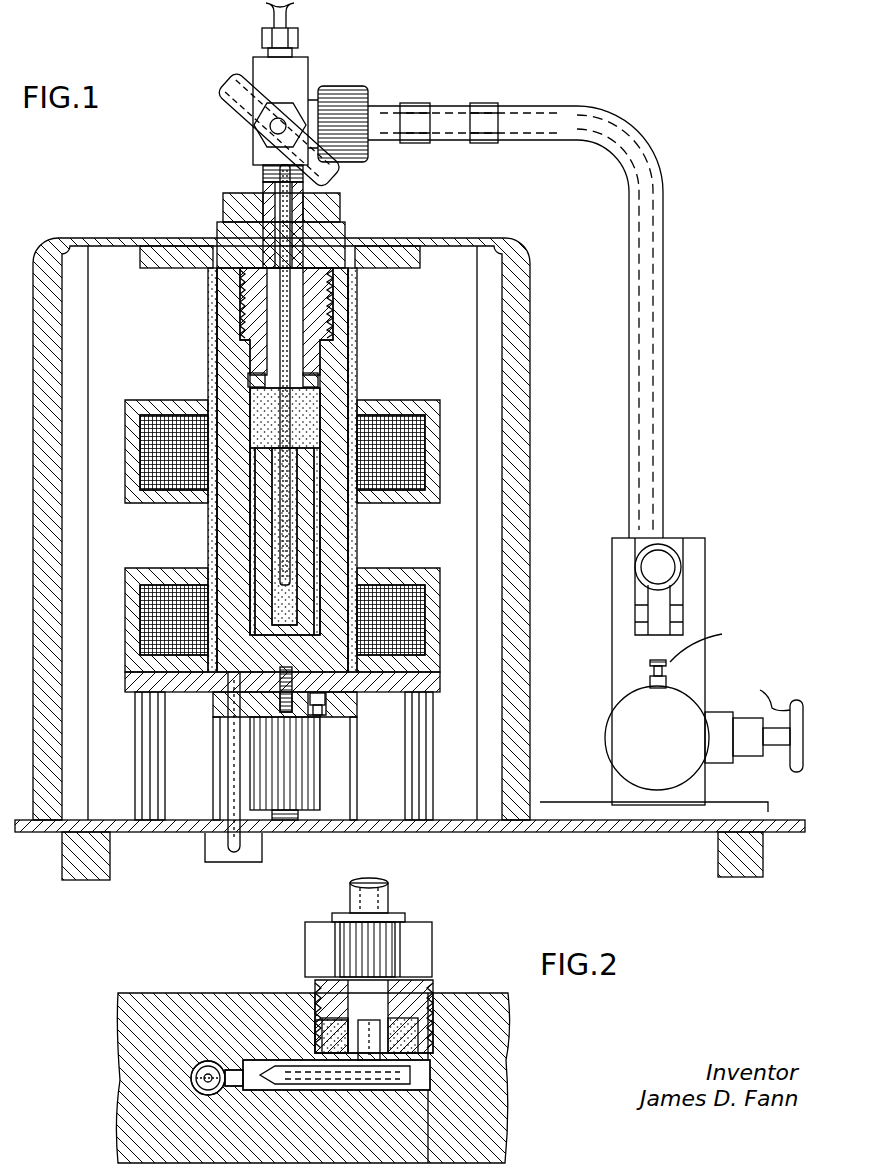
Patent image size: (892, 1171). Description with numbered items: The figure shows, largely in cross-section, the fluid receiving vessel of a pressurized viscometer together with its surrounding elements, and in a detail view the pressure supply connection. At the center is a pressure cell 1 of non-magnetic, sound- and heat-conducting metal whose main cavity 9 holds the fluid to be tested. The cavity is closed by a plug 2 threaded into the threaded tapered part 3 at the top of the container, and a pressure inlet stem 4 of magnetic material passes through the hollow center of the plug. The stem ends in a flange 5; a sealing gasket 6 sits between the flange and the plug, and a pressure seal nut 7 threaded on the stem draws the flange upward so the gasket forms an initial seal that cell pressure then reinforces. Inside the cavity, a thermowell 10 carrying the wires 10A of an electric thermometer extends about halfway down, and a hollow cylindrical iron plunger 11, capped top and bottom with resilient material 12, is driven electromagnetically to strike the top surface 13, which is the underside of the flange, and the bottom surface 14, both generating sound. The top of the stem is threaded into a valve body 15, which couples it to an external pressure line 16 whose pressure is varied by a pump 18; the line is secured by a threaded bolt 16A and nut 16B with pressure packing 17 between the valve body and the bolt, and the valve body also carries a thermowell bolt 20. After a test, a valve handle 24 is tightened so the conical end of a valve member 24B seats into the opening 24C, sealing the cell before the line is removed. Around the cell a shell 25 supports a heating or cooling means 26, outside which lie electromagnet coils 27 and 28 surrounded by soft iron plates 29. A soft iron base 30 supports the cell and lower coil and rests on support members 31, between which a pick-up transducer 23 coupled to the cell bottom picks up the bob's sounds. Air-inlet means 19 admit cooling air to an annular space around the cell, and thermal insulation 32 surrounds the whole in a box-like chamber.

In FIG. 1, the pressure cell 1 is at (340, 398).
In FIG. 1, the plug 2 is at (346, 232).
In FIG. 1, the threaded tapered part 3 is at (357, 312).
In FIG. 1, the pressure inlet stem 4 is at (270, 210).
In FIG. 1, the flange 5 is at (248, 415).
In FIG. 1, the sealing gasket 6 is at (318, 380).
In FIG. 1, the pressure seal nut 7 is at (340, 202).
In FIG. 1, the cavity 9 is at (245, 408).
In FIG. 1, the thermowell 10 is at (288, 525).
In FIG. 2, the thermowell 10 is at (193, 1072).
In FIG. 1, the wires 10A is at (285, 8).
In FIG. 2, the wires 10A is at (196, 1084).
In FIG. 1, the iron plunger 11 is at (350, 525).
In FIG. 1, the resilient material 12 is at (265, 462).
In FIG. 1, the top surface 13 is at (285, 419).
In FIG. 1, the bottom surface 14 is at (286, 537).
In FIG. 1, the valve body 15 is at (308, 76).
In FIG. 2, the valve body 15 is at (172, 993).
In FIG. 1, the external pressure line 16 is at (664, 256).
In FIG. 2, the external pressure line 16 is at (388, 888).
In FIG. 2, the threaded bolt 16A is at (432, 985).
In FIG. 2, the nut 16B is at (432, 940).
In FIG. 2, the pressure packing 17 is at (312, 1022).
In FIG. 1, the pump 18 is at (706, 596).
In FIG. 1, the air-inlet means 19 is at (215, 858).
In FIG. 1, the thermowell bolt 20 is at (298, 40).
In FIG. 1, the pick-up transducer 23 is at (310, 820).
In FIG. 1, the valve handle 24 is at (232, 92).
In FIG. 2, the valve member 24B is at (372, 1085).
In FIG. 2, the opening 24C is at (234, 1062).
In FIG. 1, the shell 25 is at (210, 326).
In FIG. 1, the heating or cooling means 26 is at (216, 350).
In FIG. 1, the electromagnet coil 27 is at (410, 483).
In FIG. 1, the electromagnet coil 28 is at (402, 595).
In FIG. 1, the soft iron plates 29 is at (142, 568).
In FIG. 1, the soft iron base 30 is at (440, 688).
In FIG. 1, the support members 31 is at (146, 733).
In FIG. 1, the thermal insulation 32 is at (170, 262).